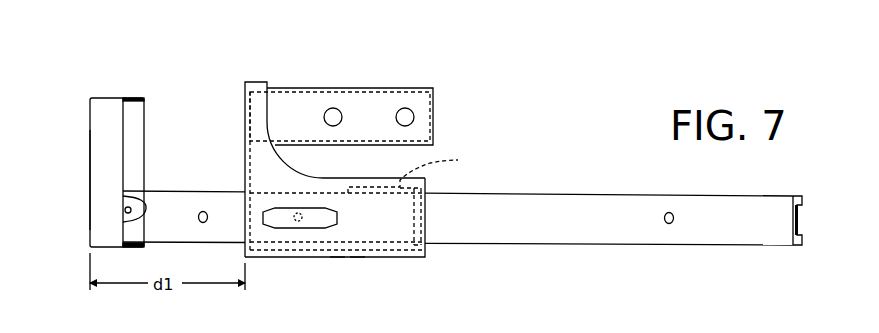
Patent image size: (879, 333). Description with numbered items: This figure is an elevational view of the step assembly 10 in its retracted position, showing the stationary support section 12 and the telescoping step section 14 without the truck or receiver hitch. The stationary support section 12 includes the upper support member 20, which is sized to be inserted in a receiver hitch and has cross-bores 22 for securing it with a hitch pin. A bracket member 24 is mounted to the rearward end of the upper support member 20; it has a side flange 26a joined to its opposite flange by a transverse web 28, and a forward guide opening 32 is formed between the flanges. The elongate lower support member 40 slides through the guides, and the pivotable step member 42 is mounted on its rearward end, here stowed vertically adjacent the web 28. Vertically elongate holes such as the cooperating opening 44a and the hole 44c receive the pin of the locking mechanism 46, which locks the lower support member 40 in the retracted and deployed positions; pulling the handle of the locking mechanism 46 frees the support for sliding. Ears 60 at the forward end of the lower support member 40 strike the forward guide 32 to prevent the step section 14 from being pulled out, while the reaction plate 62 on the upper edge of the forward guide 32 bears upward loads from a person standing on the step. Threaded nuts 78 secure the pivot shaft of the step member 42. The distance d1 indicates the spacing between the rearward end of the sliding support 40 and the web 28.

The step assembly 10 is at (133, 55).
The stationary support section 12 is at (305, 258).
The telescoping step section 14 is at (107, 92).
The upper support member 20 is at (312, 103).
The cross-bores 22 is at (405, 108).
The bracket member 24 is at (337, 258).
The side flange 26a is at (357, 258).
The transverse web 28 is at (245, 125).
The forward guide opening 32 is at (425, 228).
The lower support member 40 is at (512, 233).
The step member 42 is at (95, 155).
The cooperating opening 44a is at (203, 211).
The hole 44c is at (668, 224).
The locking mechanism 46 is at (282, 224).
The flanges or ears 60 is at (792, 218).
The reaction plate 62 is at (414, 171).
The threaded nuts 78 is at (133, 208).